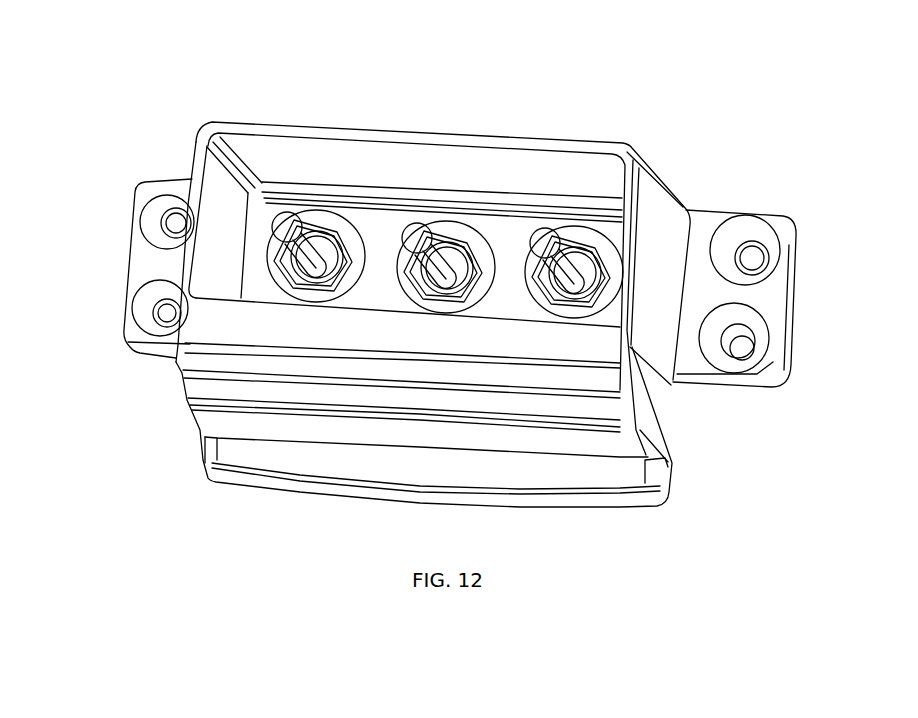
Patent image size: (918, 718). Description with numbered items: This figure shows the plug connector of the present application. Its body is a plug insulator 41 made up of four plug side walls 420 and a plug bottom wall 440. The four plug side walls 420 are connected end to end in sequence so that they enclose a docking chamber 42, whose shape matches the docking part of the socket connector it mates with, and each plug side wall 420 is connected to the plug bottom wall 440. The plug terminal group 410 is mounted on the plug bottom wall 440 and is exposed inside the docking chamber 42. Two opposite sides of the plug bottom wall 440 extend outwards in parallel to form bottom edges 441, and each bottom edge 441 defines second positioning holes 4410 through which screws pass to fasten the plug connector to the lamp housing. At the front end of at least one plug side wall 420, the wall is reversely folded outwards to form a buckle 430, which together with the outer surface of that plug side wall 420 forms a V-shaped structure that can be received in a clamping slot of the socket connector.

The plug insulator 41 is at (728, 72).
The plug bottom wall 440 is at (507, 232).
The plug side wall 420 is at (655, 220).
The plug terminal group 410 is at (432, 235).
The docking chamber 42 is at (260, 277).
The buckle 430 is at (640, 434).
The bottom edge 441 is at (145, 260).
The second positioning hole 4410 is at (753, 260).